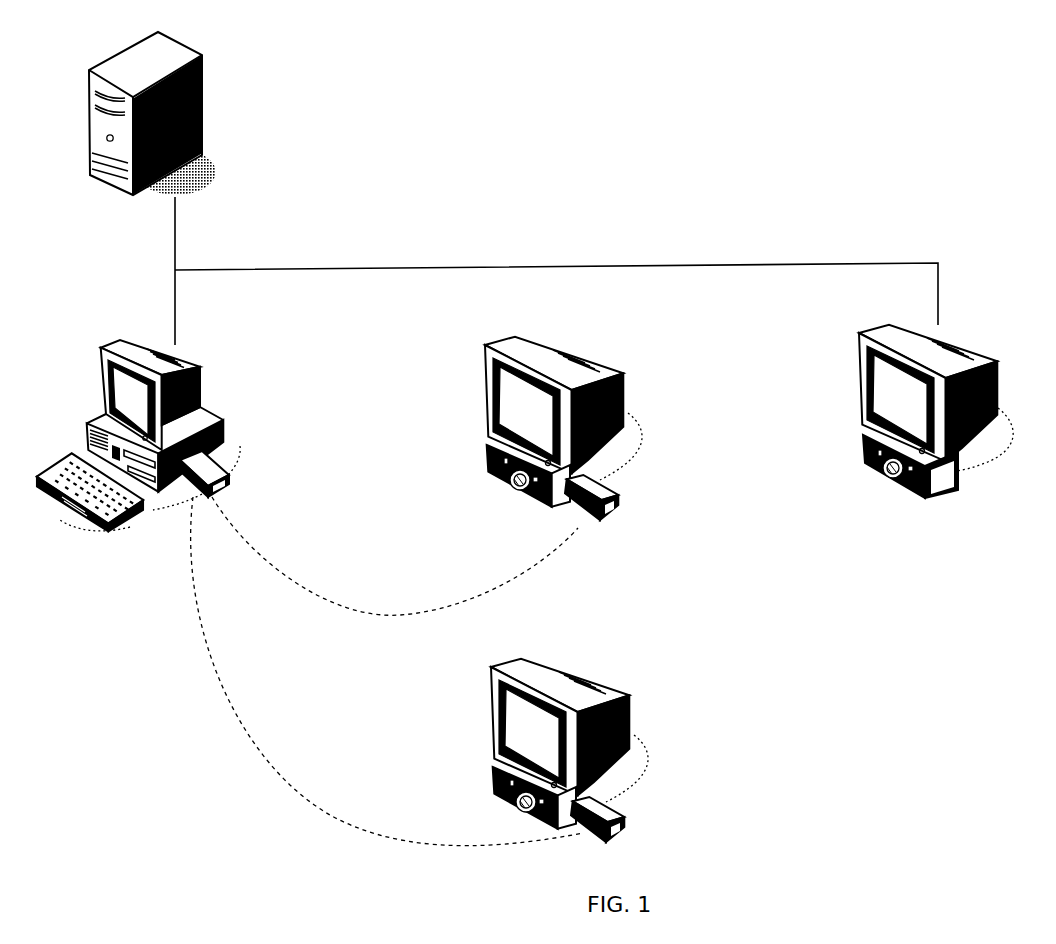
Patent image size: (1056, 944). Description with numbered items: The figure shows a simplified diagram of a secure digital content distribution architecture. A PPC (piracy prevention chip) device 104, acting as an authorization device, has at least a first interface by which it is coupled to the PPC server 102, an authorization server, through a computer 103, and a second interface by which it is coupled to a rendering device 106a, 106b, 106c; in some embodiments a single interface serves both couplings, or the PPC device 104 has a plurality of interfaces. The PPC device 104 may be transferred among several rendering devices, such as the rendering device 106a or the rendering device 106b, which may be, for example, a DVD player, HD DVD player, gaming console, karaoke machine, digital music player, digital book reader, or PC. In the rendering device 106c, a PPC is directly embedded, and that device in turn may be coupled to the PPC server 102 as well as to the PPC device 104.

The PPC server 102 is at (205, 127).
The computer 103 is at (198, 408).
The PPC device 104 is at (227, 487).
The rendering device 106a is at (512, 483).
The rendering device 106b is at (513, 807).
The rendering device 106c is at (897, 472).